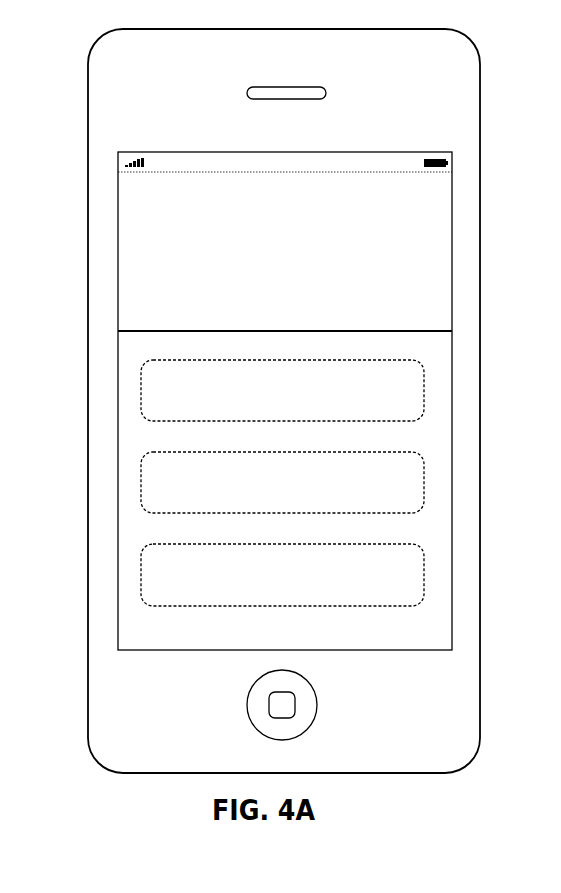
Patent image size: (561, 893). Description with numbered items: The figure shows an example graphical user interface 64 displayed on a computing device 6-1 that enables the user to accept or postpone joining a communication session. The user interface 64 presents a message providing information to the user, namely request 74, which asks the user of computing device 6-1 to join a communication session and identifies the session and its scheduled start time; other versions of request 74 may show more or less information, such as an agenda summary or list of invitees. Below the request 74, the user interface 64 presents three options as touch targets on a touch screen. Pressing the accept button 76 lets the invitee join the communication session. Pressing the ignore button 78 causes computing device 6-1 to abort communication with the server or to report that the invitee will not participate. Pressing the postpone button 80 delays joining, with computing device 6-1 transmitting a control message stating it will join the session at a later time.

The computing device 6-1 is at (465, 757).
The graphical user interface 64 is at (279, 152).
The request 74 is at (460, 241).
The accept button 76 is at (430, 388).
The ignore button 78 is at (430, 484).
The postpone button 80 is at (430, 572).